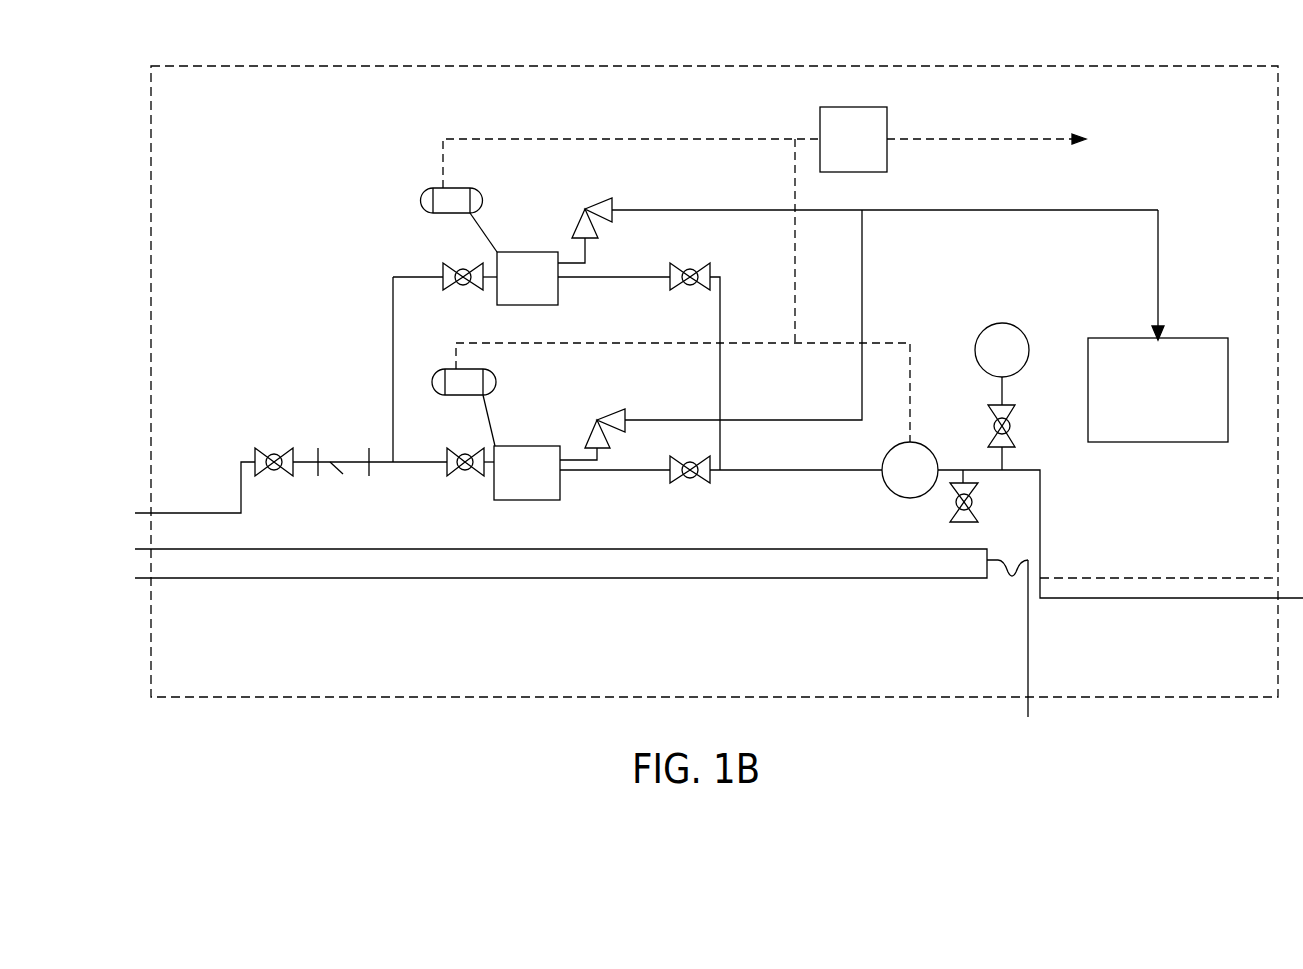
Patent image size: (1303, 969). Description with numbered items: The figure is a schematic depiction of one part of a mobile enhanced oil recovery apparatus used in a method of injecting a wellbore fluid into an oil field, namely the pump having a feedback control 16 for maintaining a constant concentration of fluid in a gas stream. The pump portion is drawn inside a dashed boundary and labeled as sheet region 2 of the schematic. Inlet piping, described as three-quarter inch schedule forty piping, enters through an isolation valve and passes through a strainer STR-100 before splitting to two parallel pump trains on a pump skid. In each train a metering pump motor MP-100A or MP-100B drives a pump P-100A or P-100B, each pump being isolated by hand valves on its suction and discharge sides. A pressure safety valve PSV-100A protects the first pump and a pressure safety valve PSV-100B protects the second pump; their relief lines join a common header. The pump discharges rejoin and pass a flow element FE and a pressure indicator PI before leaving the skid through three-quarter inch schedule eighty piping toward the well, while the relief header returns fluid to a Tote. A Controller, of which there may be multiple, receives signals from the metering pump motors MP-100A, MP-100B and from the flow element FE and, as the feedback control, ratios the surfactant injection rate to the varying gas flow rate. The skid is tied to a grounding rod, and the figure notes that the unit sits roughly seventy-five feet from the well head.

The pump having a feedback control 16 is at (684, 62).
The pump skid assembly 2 is at (719, 397).
The controller Controller is at (764, 259).
The metering pump motor A MP-100A is at (434, 220).
The metering pump motor B MP-100B is at (505, 401).
The pump A P-100A is at (533, 296).
The pump B P-100B is at (527, 487).
The pressure safety valve A PSV-100A is at (601, 218).
The pressure safety valve B PSV-100B is at (607, 423).
The strainer STR-100 is at (333, 478).
The flow element FE is at (910, 470).
The pressure indicator PI is at (1002, 396).
The tote Tote is at (1158, 390).